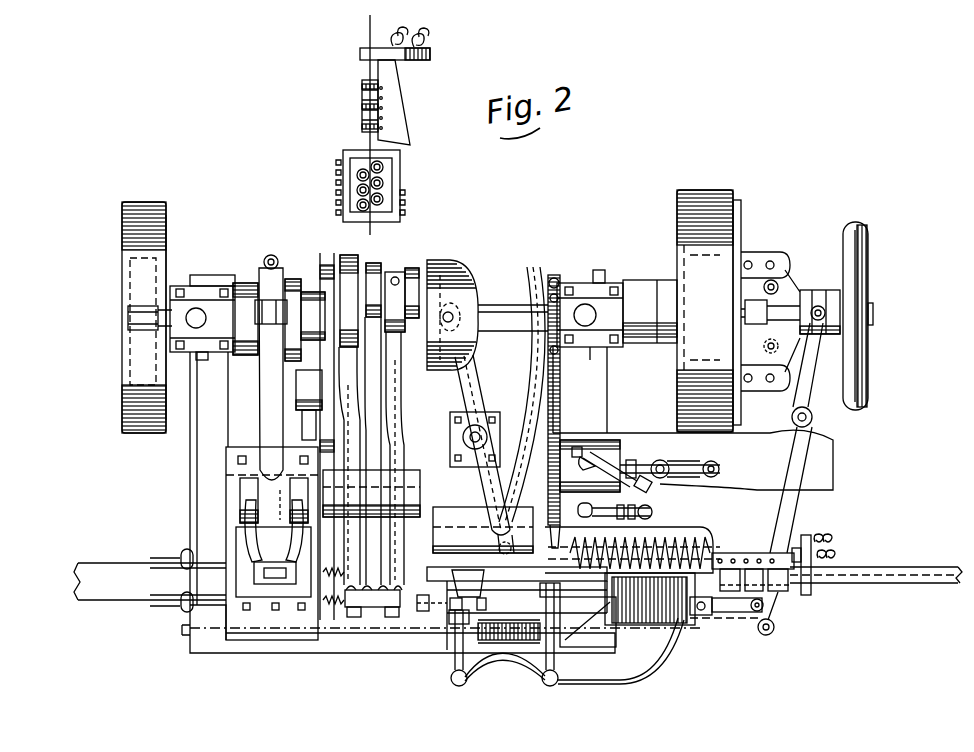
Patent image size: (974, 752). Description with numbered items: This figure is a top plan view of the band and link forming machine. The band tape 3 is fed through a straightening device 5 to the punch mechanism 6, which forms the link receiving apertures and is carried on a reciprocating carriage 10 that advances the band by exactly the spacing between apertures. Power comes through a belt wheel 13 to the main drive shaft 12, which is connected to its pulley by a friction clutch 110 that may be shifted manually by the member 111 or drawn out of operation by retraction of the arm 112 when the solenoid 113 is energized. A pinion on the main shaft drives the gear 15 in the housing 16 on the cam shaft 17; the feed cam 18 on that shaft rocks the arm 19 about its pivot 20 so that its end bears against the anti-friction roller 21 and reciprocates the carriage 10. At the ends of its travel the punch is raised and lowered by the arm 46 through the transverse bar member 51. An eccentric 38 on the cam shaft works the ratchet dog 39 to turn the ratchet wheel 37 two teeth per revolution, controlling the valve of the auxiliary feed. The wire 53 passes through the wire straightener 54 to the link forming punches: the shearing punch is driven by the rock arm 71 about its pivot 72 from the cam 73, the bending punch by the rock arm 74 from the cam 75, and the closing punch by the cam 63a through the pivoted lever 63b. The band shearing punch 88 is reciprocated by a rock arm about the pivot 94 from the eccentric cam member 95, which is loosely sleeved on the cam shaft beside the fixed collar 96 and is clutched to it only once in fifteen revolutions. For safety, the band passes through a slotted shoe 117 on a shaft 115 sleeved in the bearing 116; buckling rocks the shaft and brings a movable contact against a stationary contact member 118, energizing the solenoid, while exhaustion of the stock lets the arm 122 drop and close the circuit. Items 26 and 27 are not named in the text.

The band tape 3 is at (898, 574).
The straightening device 5 is at (742, 563).
The punch mechanism 6 is at (467, 570).
The reciprocating carriage 10 is at (527, 615).
The main drive shaft 12 is at (848, 316).
The belt wheel 13 is at (732, 204).
The gear 15 is at (132, 352).
The housing 16 is at (128, 380).
The cam shaft 17 is at (491, 314).
The feed cam 18 is at (452, 270).
The arm 19 is at (473, 383).
The pivot 20 is at (480, 434).
The anti-friction roller 21 is at (518, 552).
The hose 26 is at (507, 673).
The hose 27 is at (613, 672).
The ratchet wheel 37 is at (562, 440).
The eccentric 38 is at (559, 282).
The ratchet dog 39 is at (558, 492).
The arm 46 is at (505, 478).
The transverse bar member 51 is at (533, 581).
The wire 53 is at (369, 64).
The wire straightener 54 is at (405, 140).
The cam 63a is at (352, 254).
The pivoted lever 63b is at (352, 384).
The rock arm 71 is at (384, 390).
The pivot 72 is at (384, 497).
The cam 73 is at (382, 270).
The rock arm 74 is at (408, 407).
The cam 75 is at (412, 270).
The punch 88 is at (274, 555).
The pivot 94 is at (228, 484).
The eccentric cam member 95 is at (263, 357).
The fixed collar 96 is at (245, 346).
The friction clutch 110 is at (741, 403).
The shifting member 111 is at (707, 616).
The arm 112 is at (740, 613).
The solenoid 113 is at (663, 625).
The shaft 115 is at (507, 640).
The bearing 116 is at (452, 657).
The slotted shoe 117 is at (420, 594).
The stationary contact member 118 is at (560, 661).
The arm 122 is at (812, 577).